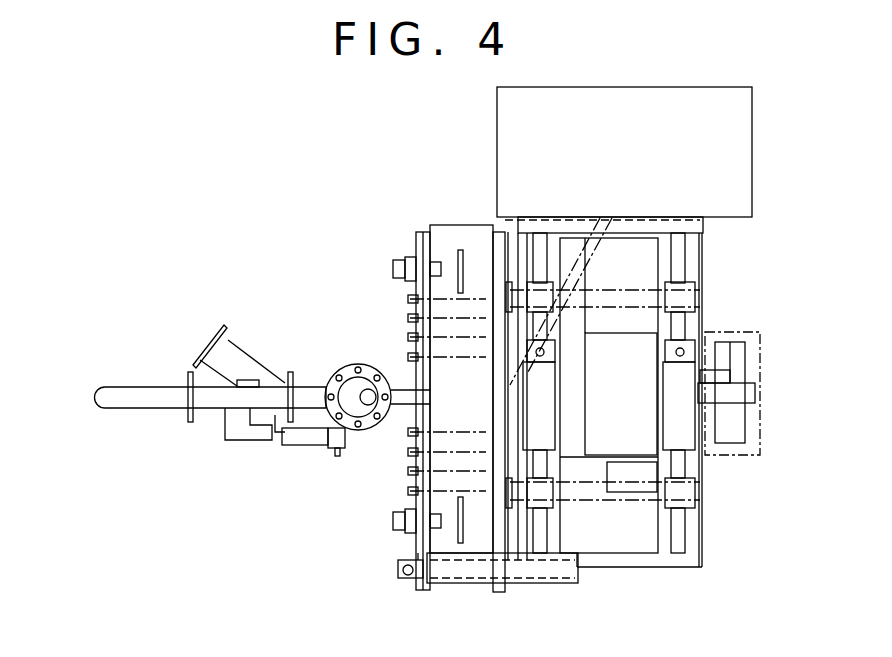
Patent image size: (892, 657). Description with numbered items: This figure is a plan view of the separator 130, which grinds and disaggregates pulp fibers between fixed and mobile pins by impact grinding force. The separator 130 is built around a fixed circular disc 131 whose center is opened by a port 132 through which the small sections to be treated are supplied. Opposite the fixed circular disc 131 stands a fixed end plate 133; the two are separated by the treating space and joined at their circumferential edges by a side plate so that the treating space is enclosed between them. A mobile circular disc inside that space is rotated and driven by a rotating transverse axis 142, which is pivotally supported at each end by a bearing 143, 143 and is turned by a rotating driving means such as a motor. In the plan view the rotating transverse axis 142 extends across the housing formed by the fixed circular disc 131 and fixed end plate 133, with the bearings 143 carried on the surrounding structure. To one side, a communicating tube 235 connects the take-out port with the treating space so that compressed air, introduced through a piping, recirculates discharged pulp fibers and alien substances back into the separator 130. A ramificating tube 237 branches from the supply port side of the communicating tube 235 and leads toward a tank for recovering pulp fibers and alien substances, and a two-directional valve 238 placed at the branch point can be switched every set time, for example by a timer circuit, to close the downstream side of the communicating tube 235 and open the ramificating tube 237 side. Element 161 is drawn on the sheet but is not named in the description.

The separator 130 is at (398, 200).
The fixed circular disc 131 is at (416, 238).
The port 132 is at (354, 368).
The fixed end plate 133 is at (510, 240).
The rotating transverse axis 142 is at (629, 395).
The bearing 143 is at (543, 410).
The support panel 161 is at (640, 347).
The communicating tube 235 is at (118, 390).
The ramificating tube 237 is at (222, 345).
The two-directional valve 238 is at (315, 445).